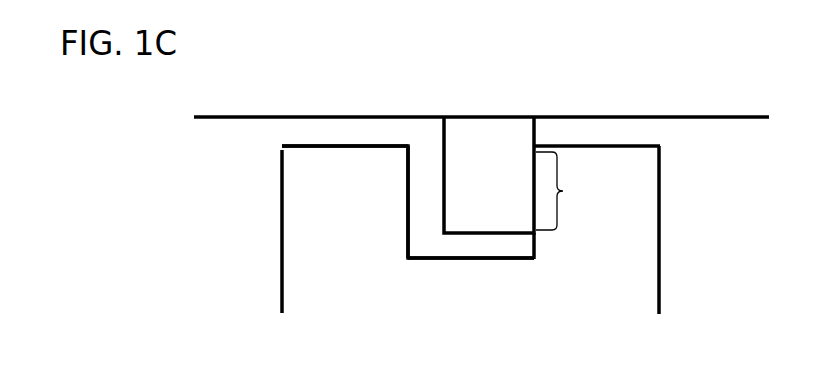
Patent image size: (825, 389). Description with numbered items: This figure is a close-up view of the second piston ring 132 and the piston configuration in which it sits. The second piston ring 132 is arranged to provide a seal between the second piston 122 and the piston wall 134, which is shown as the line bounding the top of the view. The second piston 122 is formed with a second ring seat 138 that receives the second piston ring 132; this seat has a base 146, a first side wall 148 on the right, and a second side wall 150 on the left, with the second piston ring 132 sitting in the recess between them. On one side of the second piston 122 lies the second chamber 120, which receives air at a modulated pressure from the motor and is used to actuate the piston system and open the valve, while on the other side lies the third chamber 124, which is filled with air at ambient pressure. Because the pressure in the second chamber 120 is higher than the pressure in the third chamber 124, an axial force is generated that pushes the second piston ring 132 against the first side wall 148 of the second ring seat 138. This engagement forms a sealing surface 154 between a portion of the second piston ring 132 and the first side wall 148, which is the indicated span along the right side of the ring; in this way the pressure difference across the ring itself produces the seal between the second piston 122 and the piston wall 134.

The second chamber 120 is at (293, 229).
The third chamber 124 is at (641, 170).
The second piston 122 is at (640, 277).
The second piston ring 132 is at (496, 133).
The piston wall 134 is at (738, 112).
The second ring seat 138 is at (436, 275).
The base 146 is at (481, 260).
The first side wall 148 is at (537, 243).
The second side wall 150 is at (408, 202).
The sealing surface 154 is at (563, 191).